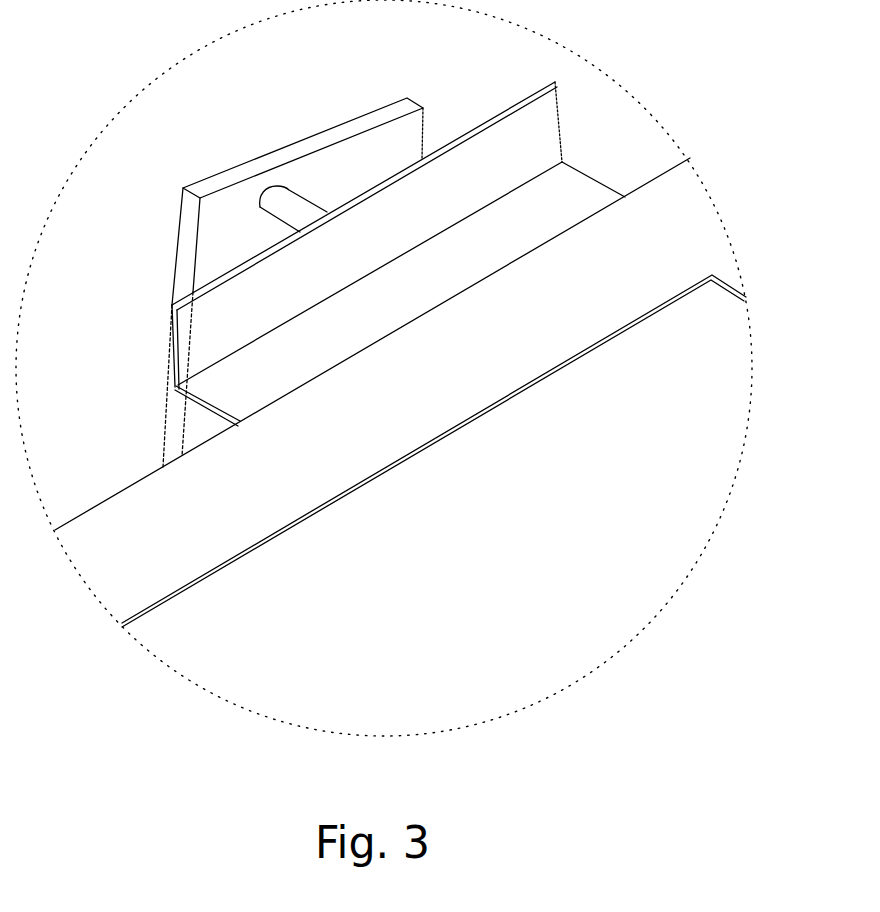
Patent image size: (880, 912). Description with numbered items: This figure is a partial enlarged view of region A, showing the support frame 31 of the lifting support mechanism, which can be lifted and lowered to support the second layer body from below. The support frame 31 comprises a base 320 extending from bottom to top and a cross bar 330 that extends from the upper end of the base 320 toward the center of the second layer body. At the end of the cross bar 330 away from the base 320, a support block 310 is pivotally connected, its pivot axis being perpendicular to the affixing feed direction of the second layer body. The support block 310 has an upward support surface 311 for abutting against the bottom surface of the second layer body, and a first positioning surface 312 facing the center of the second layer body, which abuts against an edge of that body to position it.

The support frame 31 is at (122, 130).
The support block 310 is at (273, 363).
The support surface 311 is at (580, 193).
The first positioning surface 312 is at (531, 131).
The base 320 is at (287, 150).
The cross bar 330 is at (287, 204).
The enlarged region A is at (608, 657).